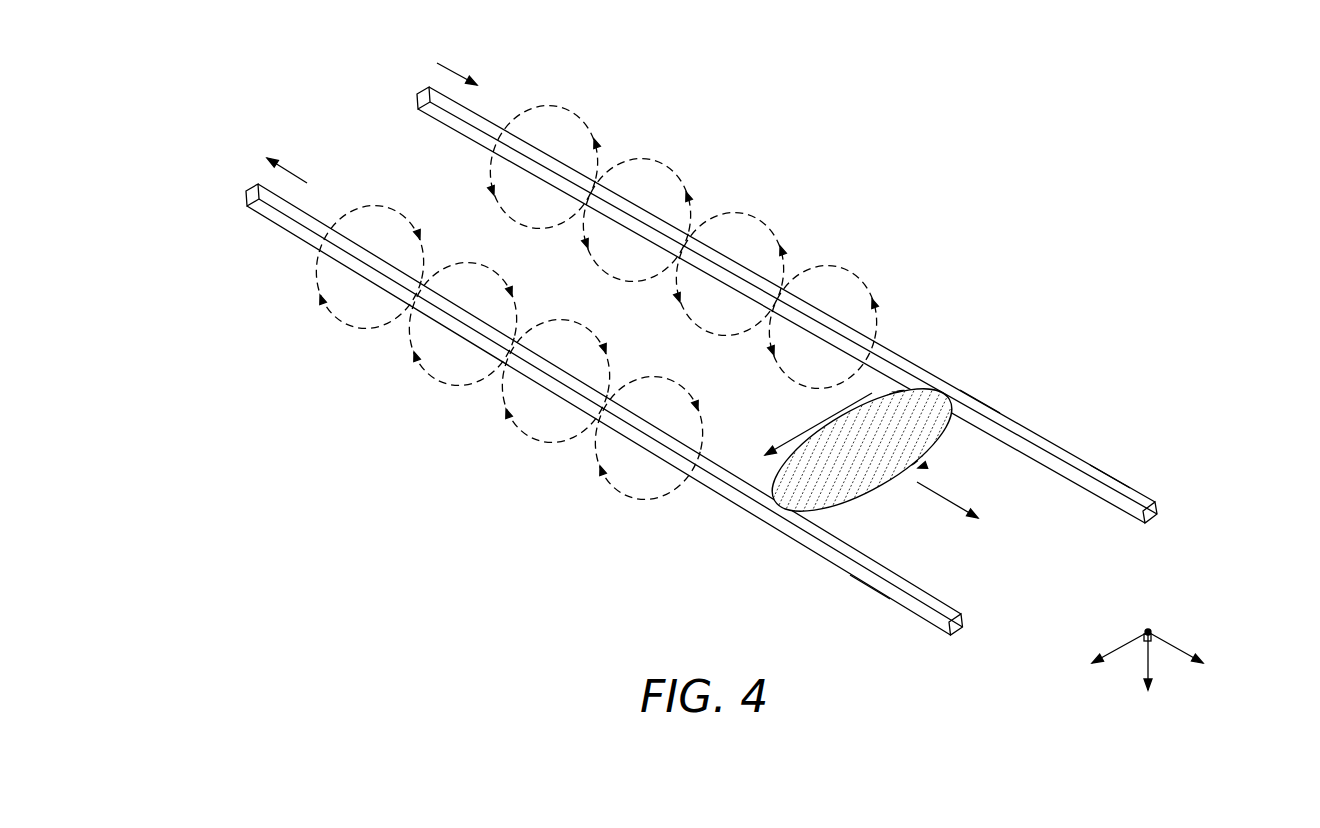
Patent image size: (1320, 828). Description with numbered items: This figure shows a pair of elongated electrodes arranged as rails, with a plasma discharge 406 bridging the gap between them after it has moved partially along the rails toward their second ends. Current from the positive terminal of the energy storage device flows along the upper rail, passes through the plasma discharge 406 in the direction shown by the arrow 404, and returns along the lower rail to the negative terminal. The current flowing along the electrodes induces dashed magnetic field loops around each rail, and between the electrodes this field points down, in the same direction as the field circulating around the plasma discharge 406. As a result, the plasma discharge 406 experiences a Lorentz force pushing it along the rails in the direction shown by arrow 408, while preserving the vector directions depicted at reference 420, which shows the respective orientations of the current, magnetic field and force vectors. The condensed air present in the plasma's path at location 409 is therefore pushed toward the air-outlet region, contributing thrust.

The arrow showing current direction through plasma discharge 404 is at (790, 437).
The plasma discharge 406 is at (793, 493).
The arrow showing Lorentz force direction 408 is at (927, 490).
The location of air in the plasma's path 409 is at (977, 453).
The vector direction reference 420 is at (1148, 630).